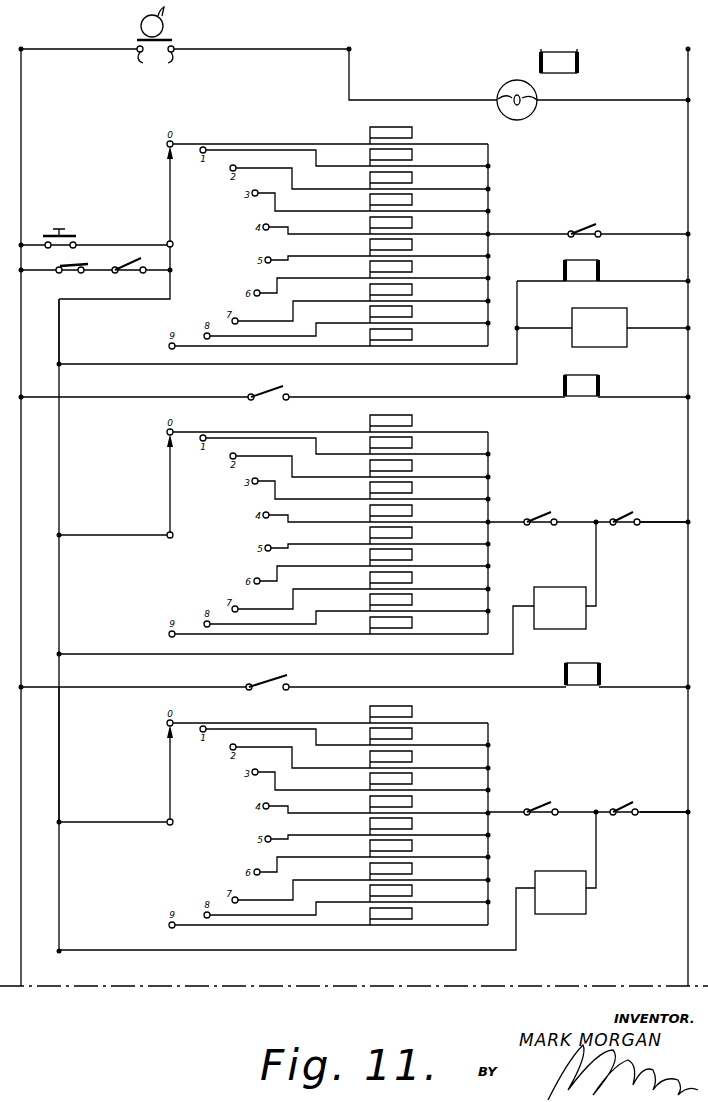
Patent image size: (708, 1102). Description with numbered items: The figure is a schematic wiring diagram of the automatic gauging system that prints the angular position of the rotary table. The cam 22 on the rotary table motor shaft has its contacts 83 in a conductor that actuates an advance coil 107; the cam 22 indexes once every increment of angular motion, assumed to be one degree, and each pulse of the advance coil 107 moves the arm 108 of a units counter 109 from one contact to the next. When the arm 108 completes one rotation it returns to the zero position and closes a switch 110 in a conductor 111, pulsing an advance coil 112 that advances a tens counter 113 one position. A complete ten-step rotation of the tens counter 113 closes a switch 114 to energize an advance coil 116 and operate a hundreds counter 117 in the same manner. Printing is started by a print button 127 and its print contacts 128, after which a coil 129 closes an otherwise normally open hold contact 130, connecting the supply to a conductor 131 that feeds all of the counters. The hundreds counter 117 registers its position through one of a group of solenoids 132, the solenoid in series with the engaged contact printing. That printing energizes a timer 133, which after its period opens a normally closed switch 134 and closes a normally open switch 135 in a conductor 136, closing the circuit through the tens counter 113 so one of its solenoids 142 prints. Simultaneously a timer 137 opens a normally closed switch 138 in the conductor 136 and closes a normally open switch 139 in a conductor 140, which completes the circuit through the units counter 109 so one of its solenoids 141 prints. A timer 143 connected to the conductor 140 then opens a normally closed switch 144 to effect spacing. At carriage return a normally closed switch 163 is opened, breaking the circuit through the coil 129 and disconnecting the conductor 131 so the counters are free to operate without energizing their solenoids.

The cam 22 is at (164, 25).
The contacts 83 is at (155, 58).
The advance coil 107 is at (566, 74).
The print button 127 is at (68, 232).
The print contacts 128 is at (78, 252).
The switch 163 is at (76, 275).
The hold contact 130 is at (133, 275).
The hundreds counter 117 is at (173, 248).
The conductor 131 is at (59, 342).
The solenoids 132 is at (425, 333).
The switch 134 is at (588, 229).
The coil 129 is at (588, 266).
The timer 133 is at (612, 317).
The advance coil 116 is at (588, 381).
The switch 114 is at (285, 390).
The tens counter 113 is at (173, 538).
The solenoids 142 is at (425, 621).
The switch 138 is at (540, 517).
The switch 135 is at (622, 513).
The conductor 136 is at (657, 522).
The timer 137 is at (576, 626).
The advance coil 112 is at (590, 669).
The switch 110 is at (266, 679).
The conductor 111 is at (115, 691).
The arm 108 is at (172, 778).
The units counter 109 is at (172, 826).
The solenoids 141 is at (425, 912).
The switch 144 is at (540, 807).
The switch 139 is at (622, 803).
The conductor 140 is at (655, 812).
The timer 143 is at (566, 912).